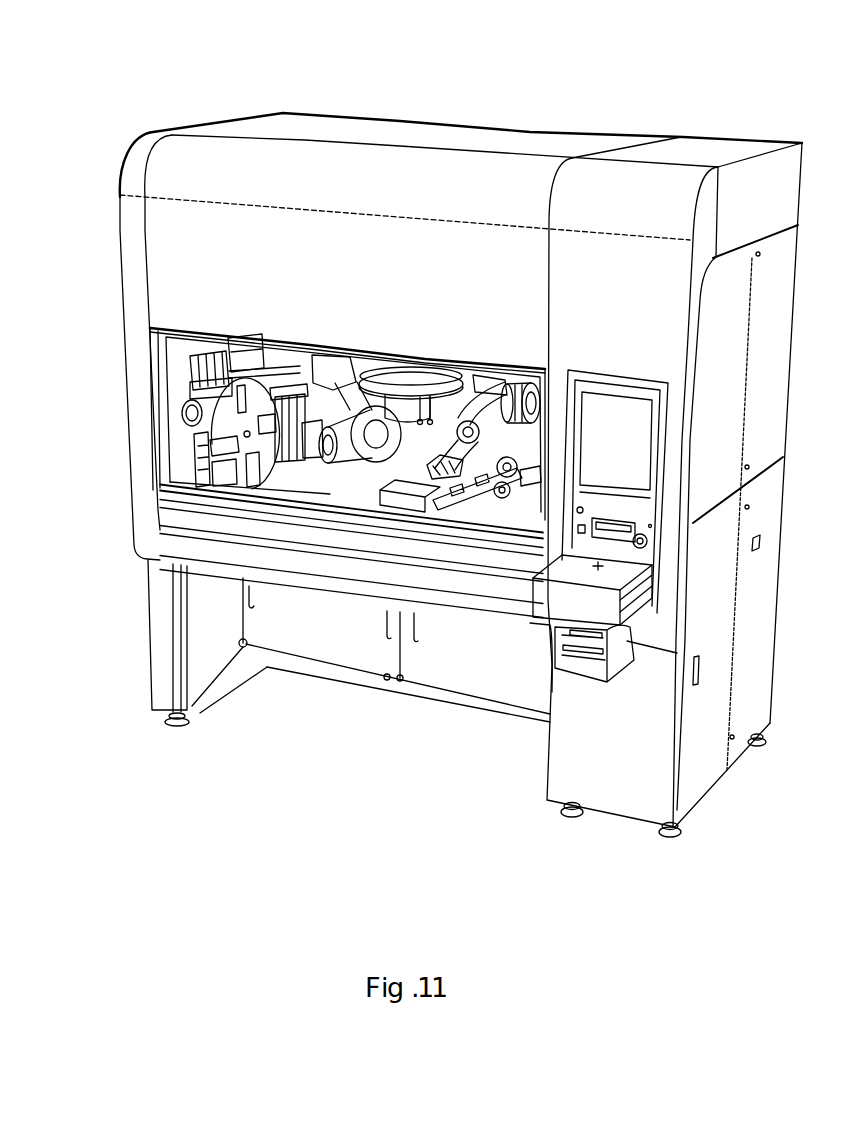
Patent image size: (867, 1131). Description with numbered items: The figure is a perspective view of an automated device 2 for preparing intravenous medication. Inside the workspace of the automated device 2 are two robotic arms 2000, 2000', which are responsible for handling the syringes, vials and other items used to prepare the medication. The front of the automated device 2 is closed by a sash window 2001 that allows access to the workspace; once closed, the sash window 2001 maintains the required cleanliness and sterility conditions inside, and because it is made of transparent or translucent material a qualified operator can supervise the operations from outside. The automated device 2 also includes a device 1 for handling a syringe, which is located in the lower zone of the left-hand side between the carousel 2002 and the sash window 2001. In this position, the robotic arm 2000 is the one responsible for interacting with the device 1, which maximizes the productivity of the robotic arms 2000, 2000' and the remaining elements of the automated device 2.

The automated device for preparing intravenous medication 2 is at (228, 100).
The device for handling a syringe 1 is at (194, 452).
The robotic arm 2000 is at (335, 259).
The robotic arm 2000' is at (488, 268).
The sash window 2001 is at (153, 371).
The carousel 2002 is at (182, 414).